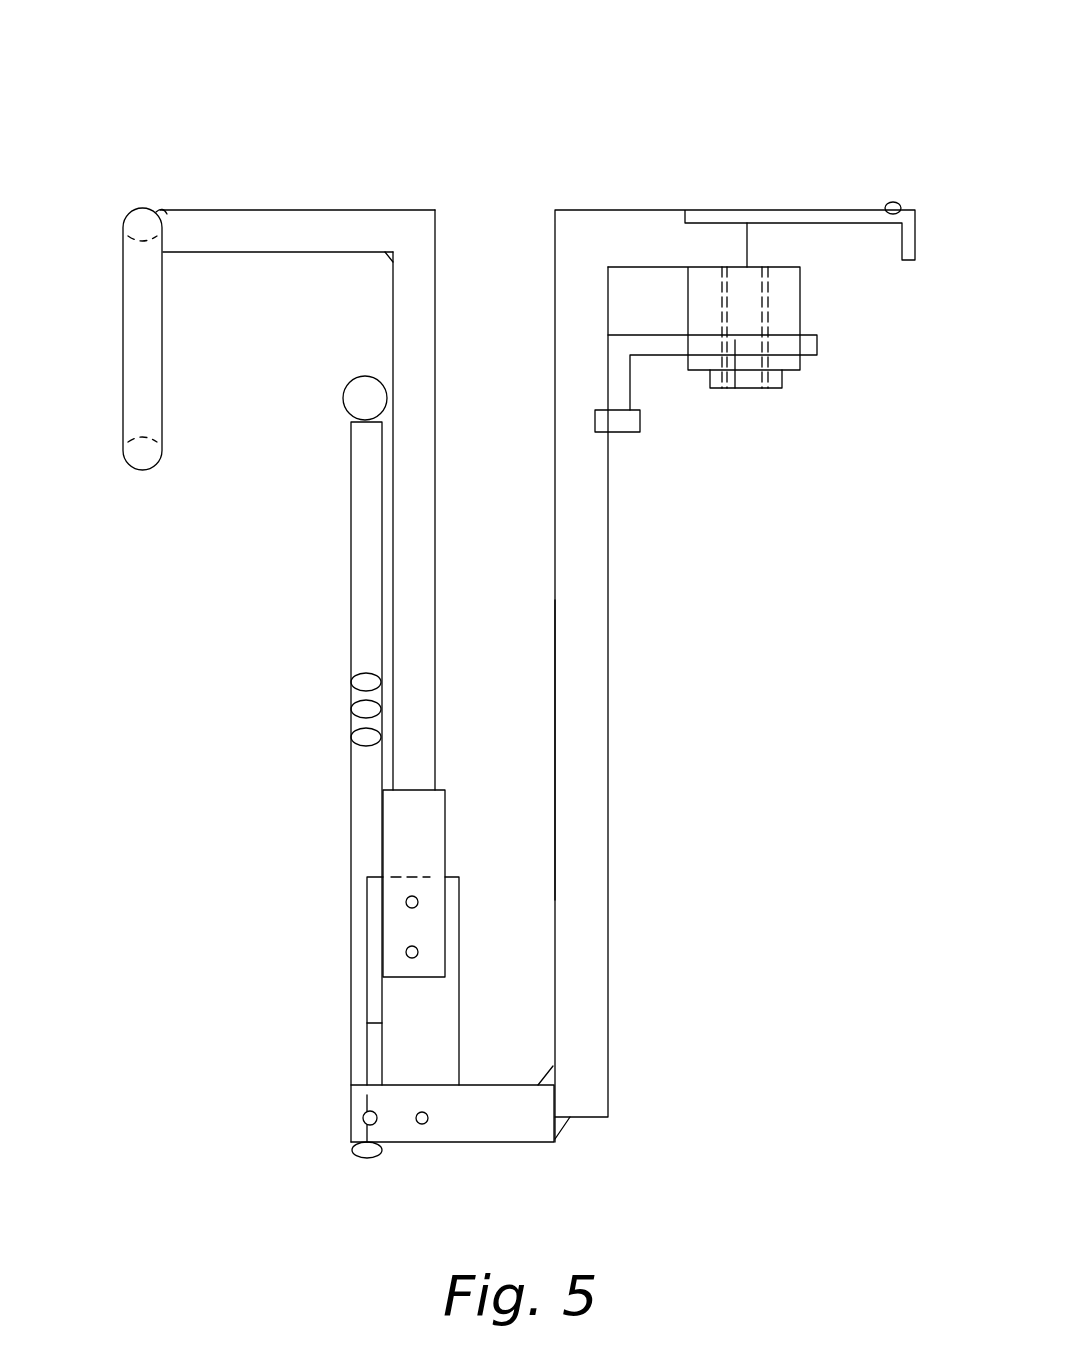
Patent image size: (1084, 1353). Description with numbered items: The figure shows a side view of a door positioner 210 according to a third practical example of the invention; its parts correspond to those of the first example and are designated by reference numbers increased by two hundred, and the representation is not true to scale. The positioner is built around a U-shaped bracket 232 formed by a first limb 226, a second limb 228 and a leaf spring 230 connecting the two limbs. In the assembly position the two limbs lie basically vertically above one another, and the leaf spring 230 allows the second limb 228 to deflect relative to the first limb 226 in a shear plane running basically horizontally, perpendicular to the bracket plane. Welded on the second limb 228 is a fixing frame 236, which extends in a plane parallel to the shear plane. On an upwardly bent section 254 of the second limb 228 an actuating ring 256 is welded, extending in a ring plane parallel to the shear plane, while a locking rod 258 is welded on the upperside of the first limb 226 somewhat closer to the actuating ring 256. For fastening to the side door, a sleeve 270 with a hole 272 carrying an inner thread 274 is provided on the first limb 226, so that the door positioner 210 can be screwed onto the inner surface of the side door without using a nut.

The door positioner 210 is at (692, 148).
The first limb 226 is at (583, 1072).
The second limb 228 is at (412, 565).
The leaf spring 230 is at (433, 1022).
The U-shaped bracket 232 is at (628, 717).
The fixing frame 236 is at (362, 825).
The bent section of the second limb 254 is at (277, 222).
The actuating ring 256 is at (132, 468).
The locking rod 258 is at (623, 432).
The sleeve 270 is at (785, 305).
The hole 272 is at (747, 313).
The inner thread 274 is at (720, 287).